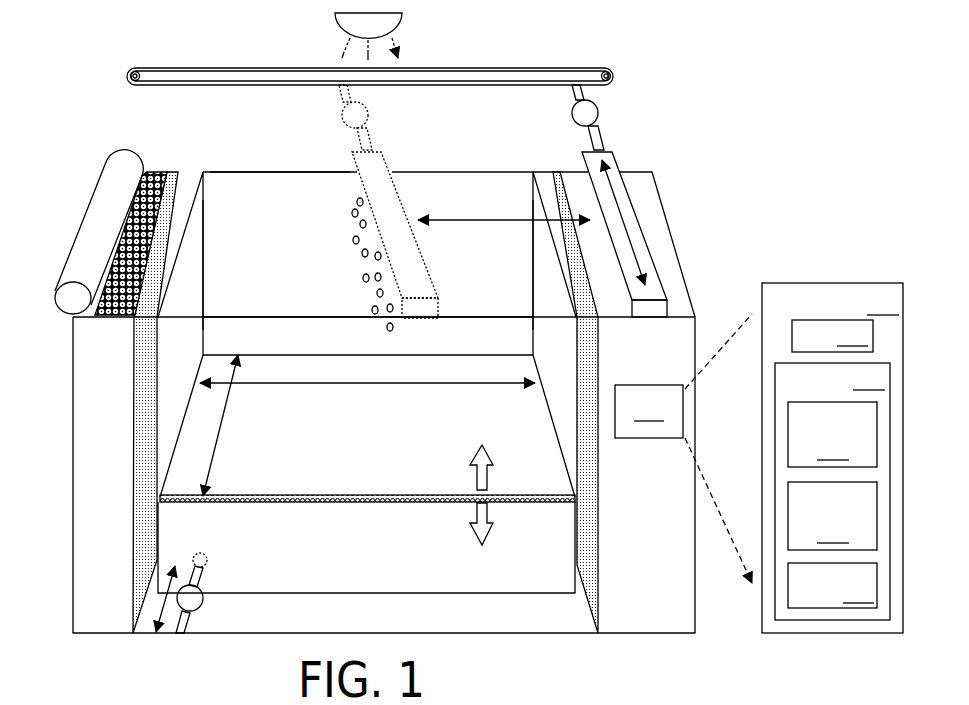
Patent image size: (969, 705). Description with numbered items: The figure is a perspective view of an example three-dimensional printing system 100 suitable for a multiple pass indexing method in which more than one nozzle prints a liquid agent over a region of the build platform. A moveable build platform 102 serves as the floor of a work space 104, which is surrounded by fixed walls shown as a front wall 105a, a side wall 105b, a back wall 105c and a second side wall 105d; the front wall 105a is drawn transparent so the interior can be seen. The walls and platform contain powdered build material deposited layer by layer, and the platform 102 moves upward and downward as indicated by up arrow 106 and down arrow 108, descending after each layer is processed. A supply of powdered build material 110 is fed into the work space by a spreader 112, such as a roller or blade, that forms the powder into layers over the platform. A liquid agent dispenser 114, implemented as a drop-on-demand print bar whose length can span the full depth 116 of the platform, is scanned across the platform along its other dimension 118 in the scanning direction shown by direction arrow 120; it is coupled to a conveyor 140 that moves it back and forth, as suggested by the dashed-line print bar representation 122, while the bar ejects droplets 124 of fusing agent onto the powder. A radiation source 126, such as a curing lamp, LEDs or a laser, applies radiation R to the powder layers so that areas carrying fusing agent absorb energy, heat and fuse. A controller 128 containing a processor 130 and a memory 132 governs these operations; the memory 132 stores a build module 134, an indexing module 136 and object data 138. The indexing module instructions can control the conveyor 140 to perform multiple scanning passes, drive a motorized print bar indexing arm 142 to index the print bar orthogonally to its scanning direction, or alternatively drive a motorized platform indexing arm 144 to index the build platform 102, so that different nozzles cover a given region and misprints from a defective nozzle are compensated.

The three-dimensional printing system 100 is at (718, 142).
The build platform 102 is at (273, 502).
The work space 104 is at (493, 193).
The front wall 105a is at (300, 316).
The side wall 105b is at (197, 271).
The back wall 105c is at (273, 173).
The side wall 105d is at (540, 302).
The up arrow 106 is at (490, 472).
The down arrow 108 is at (490, 516).
The supply of powdered build material 110 is at (103, 318).
The spreader 112 is at (88, 232).
The liquid agent dispenser 114 is at (633, 207).
The depth of the build platform 116 is at (222, 426).
The chamber width 118 is at (447, 383).
The direction arrow 120 is at (477, 221).
The dashed-line print bar representation 122 is at (395, 200).
The droplets of fusing agent 124 is at (366, 256).
The radiation source 126 is at (338, 26).
The controller 128 is at (759, 458).
The processor 130 is at (832, 336).
The memory 132 is at (832, 491).
The build module 134 is at (832, 434).
The indexing module 136 is at (832, 516).
The object data 138 is at (832, 585).
The conveyor 140 is at (200, 84).
The motorized print bar indexing arm 142 is at (571, 115).
The motorized platform indexing arm 144 is at (203, 603).
The radiation R is at (399, 38).